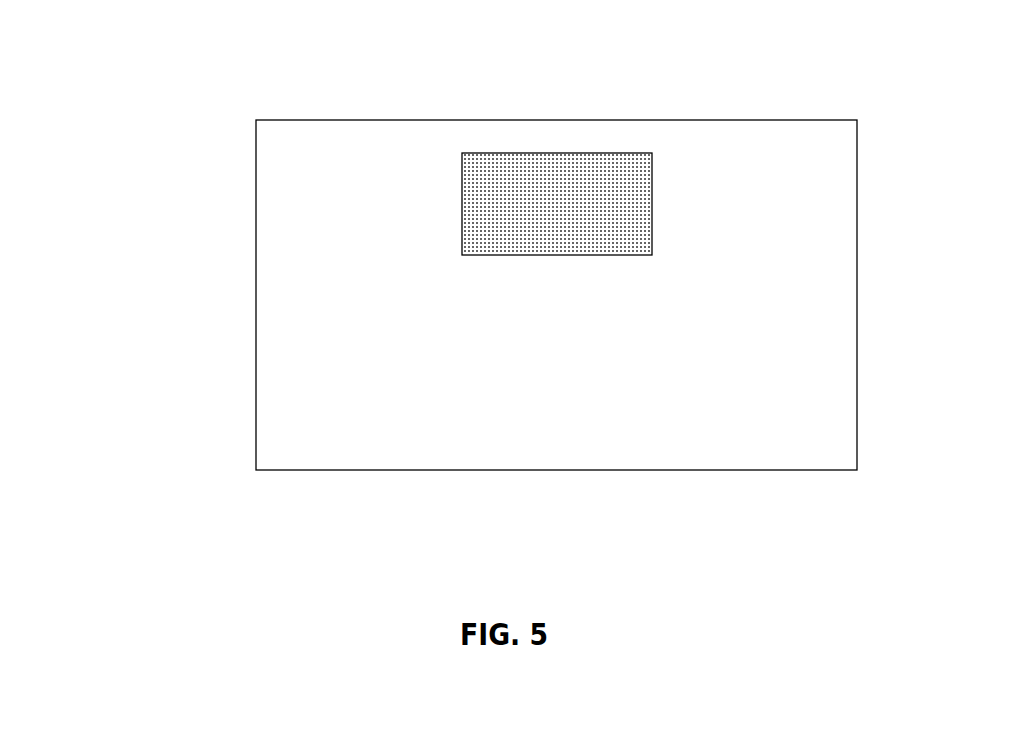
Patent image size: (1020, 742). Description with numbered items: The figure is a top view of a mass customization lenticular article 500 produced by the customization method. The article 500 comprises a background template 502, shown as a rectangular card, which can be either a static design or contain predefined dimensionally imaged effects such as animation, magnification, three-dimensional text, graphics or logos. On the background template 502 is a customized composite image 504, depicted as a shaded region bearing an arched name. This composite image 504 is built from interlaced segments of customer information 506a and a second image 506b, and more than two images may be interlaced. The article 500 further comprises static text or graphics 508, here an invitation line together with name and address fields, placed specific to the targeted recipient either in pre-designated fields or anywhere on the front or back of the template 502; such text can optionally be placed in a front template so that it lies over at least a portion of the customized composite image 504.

The article 500 is at (155, 123).
The background template 502 is at (302, 220).
The customized composite image 504 is at (653, 240).
The interlaced segments of customer information 506a is at (613, 180).
The second image 506b is at (478, 158).
The static text or graphics 508 is at (608, 360).